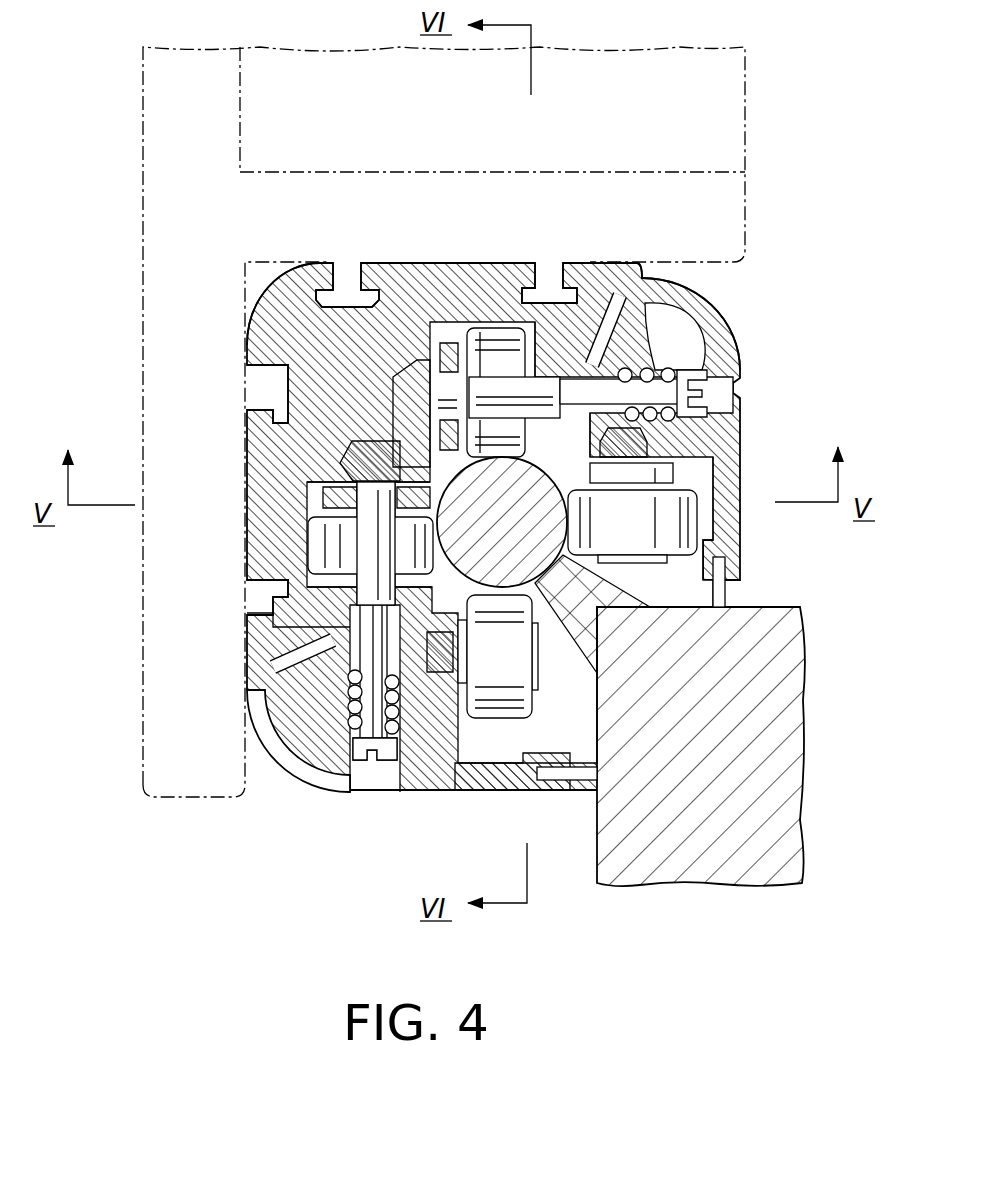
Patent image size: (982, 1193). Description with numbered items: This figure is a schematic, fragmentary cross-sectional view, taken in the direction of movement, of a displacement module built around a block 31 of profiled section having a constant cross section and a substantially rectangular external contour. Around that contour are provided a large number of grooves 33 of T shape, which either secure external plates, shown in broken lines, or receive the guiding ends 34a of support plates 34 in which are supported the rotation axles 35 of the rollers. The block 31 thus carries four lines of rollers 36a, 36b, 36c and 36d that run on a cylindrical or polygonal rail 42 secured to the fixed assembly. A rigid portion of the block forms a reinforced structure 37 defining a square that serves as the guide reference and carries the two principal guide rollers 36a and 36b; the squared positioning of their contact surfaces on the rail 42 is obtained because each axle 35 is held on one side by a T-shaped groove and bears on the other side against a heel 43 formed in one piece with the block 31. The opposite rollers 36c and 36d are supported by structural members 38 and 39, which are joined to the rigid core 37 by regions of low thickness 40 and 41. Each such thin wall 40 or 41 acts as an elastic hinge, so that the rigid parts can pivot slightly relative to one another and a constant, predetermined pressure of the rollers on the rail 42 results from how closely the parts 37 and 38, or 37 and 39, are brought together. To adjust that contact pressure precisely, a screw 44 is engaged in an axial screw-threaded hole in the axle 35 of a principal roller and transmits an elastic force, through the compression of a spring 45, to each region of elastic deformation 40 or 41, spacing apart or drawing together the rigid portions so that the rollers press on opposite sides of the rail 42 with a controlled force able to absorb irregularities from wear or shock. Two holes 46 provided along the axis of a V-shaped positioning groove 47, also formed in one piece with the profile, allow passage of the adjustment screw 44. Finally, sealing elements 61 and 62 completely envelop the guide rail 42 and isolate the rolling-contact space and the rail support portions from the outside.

The block 31 is at (236, 305).
The grooves 33 is at (346, 290).
The support plates 34 is at (449, 352).
The guiding ends 34a is at (343, 460).
The rotation axle 35 is at (485, 378).
The roller 36a is at (498, 330).
The roller 36b is at (309, 545).
The roller 36c is at (665, 527).
The roller 36d is at (512, 705).
The reinforced structure 37 is at (298, 300).
The structural member 38 is at (455, 775).
The structural member 39 is at (725, 522).
The region of low thickness 40 is at (245, 672).
The region of low thickness 41 is at (638, 262).
The rail 42 is at (527, 552).
The heel 43 is at (563, 360).
The screw 44 is at (688, 355).
The spring 45 is at (650, 368).
The holes 46 is at (355, 631).
The positioning groove 47 is at (380, 768).
The sealing element 61 is at (578, 772).
The sealing element 62 is at (723, 592).